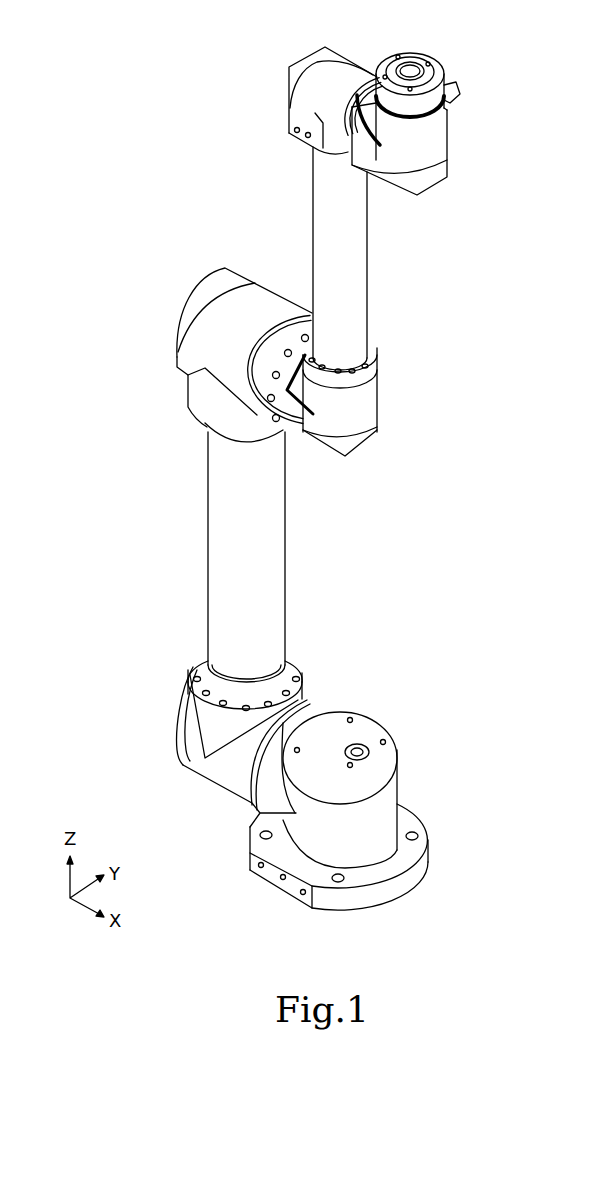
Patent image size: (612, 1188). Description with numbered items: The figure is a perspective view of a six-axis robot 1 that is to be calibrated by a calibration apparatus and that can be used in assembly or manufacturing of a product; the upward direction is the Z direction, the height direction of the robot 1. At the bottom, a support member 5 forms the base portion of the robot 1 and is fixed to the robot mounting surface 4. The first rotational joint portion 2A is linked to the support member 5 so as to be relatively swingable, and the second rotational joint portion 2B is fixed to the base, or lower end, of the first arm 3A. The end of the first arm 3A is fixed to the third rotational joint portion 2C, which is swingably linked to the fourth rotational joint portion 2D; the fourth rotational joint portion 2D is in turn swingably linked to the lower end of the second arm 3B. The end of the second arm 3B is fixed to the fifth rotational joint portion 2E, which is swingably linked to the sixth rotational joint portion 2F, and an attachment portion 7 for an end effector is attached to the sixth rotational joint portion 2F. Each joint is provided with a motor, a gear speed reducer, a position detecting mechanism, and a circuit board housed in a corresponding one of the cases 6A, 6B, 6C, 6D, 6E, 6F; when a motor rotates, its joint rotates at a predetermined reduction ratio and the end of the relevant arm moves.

The robot 1 is at (312, 472).
The first rotational joint portion 2A is at (385, 812).
The second rotational joint portion 2B is at (220, 773).
The third rotational joint portion 2C is at (266, 298).
The fourth rotational joint portion 2D is at (372, 393).
The fifth rotational joint portion 2E is at (353, 72).
The sixth rotational joint portion 2F is at (446, 133).
The first arm 3A is at (272, 534).
The second arm 3B is at (360, 262).
The robot mounting surface 4 is at (528, 893).
The support member 5 is at (383, 892).
The case 6A is at (385, 773).
The case 6B is at (182, 726).
The case 6C is at (215, 297).
The case 6D is at (372, 432).
The case 6E is at (290, 82).
The case 6F is at (448, 170).
The attachment portion 7 is at (415, 50).